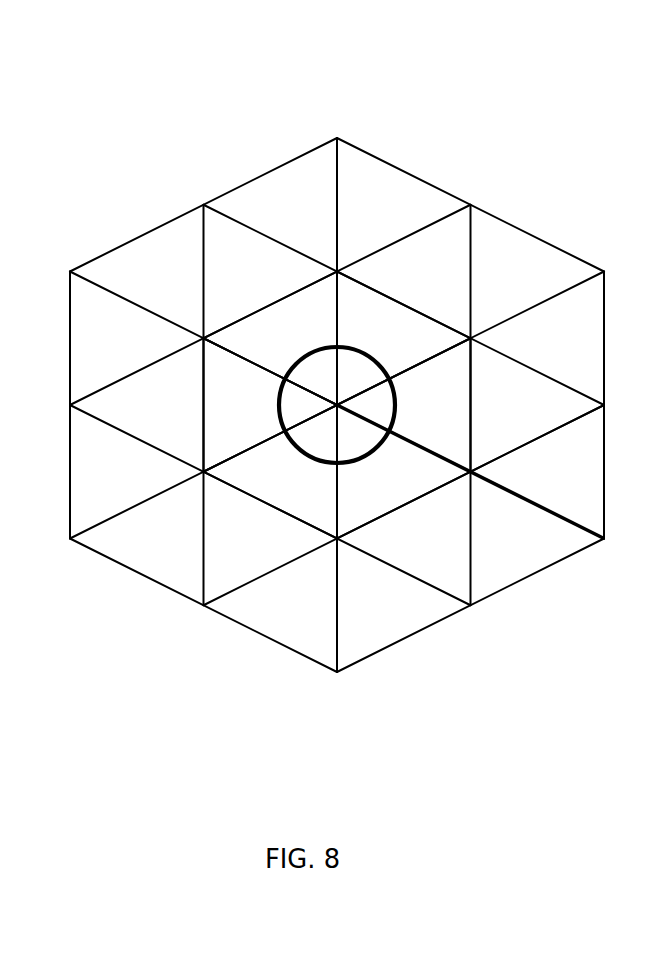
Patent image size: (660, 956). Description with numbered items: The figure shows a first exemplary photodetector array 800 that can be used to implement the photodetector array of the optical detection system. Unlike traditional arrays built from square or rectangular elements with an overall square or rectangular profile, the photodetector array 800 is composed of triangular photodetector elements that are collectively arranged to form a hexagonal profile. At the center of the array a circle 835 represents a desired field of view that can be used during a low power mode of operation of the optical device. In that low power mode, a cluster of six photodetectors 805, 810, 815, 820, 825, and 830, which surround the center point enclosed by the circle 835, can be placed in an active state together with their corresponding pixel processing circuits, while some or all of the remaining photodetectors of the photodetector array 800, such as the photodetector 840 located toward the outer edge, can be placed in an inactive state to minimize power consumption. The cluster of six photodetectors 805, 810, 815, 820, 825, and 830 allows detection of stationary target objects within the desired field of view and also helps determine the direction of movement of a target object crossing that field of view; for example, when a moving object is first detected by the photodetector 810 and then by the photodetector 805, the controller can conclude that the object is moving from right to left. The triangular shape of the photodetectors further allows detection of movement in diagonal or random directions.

The photodetector array 800 is at (505, 106).
The photodetector 805 is at (271, 339).
The photodetector 810 is at (404, 339).
The photodetector 815 is at (404, 405).
The photodetector 820 is at (404, 472).
The photodetector 825 is at (271, 472).
The photodetector 830 is at (271, 405).
The circle 835 is at (377, 356).
The photodetector 840 is at (470, 472).